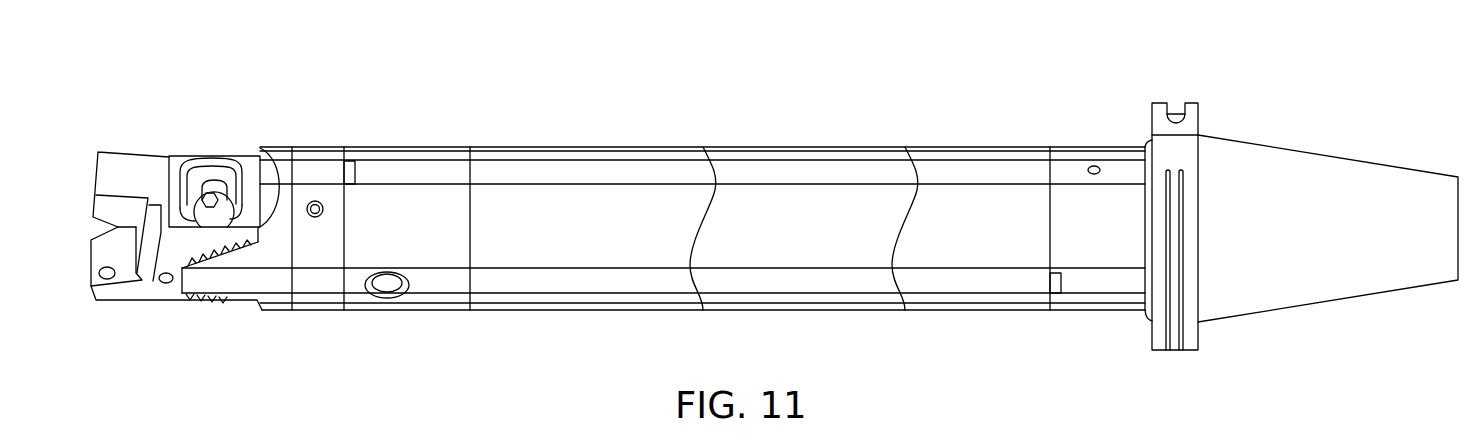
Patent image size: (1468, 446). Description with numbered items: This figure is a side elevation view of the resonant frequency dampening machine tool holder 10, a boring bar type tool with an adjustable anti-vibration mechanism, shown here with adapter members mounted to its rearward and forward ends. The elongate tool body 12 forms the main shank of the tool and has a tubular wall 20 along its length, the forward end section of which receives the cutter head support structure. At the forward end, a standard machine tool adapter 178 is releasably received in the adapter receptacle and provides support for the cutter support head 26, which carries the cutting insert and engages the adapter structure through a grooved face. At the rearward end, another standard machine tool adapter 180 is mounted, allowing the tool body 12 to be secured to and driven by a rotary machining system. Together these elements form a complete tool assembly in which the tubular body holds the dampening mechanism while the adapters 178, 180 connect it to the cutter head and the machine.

The adjustable resonant frequency dampening machine tool holder 10 is at (774, 197).
The elongate tool body 12 is at (952, 153).
The tubular wall 20 is at (565, 153).
The cutter support head 26 is at (200, 138).
The forward machine tool adapter 178 is at (312, 285).
The rear machine tool adapter 180 is at (1298, 288).